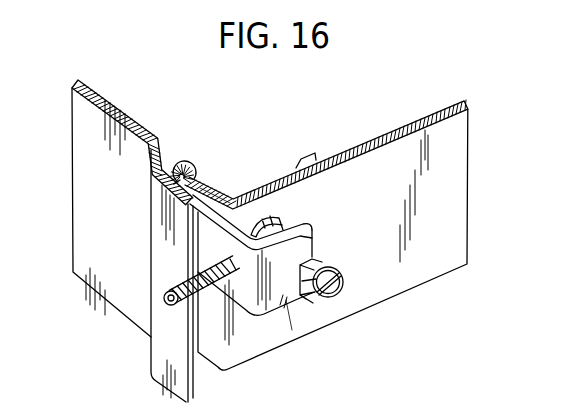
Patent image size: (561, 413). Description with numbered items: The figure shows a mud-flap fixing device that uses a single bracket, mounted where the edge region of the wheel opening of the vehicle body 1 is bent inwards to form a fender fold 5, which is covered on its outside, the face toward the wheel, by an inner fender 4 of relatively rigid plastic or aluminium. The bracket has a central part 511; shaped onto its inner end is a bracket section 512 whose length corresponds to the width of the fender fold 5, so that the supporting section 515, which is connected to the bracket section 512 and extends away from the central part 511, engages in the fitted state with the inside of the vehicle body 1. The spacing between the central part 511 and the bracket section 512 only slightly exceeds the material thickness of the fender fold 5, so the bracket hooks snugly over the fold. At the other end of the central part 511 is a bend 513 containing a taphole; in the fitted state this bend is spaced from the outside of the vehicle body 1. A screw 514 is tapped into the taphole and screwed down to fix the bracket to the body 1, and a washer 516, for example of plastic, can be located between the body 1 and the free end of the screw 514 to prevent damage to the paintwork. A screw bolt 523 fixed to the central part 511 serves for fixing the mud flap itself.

The vehicle body 1 is at (425, 262).
The inner fender 4 is at (125, 103).
The fender fold 5 is at (197, 170).
The central part 511 is at (247, 302).
The bracket section 512 is at (218, 183).
The bend 513 is at (290, 294).
The screw 514 is at (335, 297).
The supporting section 515 is at (298, 157).
The washer 516 is at (283, 220).
The screw bolt 523 is at (176, 292).